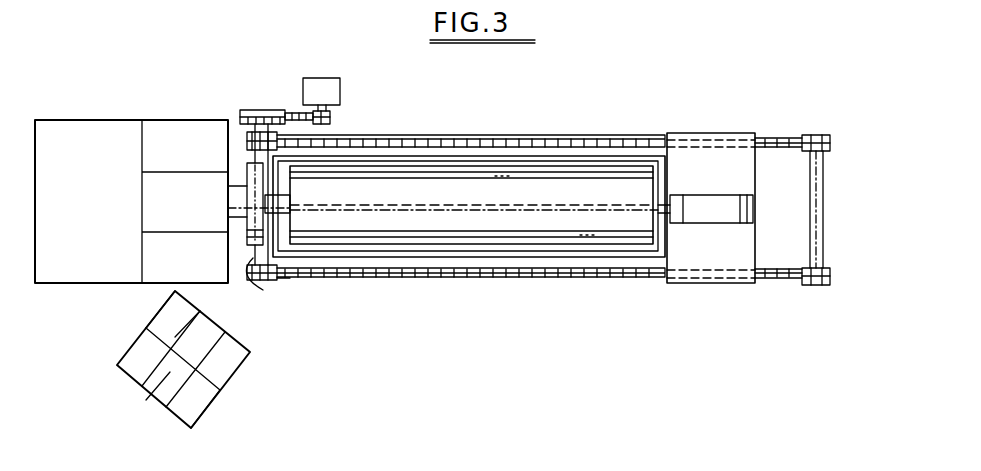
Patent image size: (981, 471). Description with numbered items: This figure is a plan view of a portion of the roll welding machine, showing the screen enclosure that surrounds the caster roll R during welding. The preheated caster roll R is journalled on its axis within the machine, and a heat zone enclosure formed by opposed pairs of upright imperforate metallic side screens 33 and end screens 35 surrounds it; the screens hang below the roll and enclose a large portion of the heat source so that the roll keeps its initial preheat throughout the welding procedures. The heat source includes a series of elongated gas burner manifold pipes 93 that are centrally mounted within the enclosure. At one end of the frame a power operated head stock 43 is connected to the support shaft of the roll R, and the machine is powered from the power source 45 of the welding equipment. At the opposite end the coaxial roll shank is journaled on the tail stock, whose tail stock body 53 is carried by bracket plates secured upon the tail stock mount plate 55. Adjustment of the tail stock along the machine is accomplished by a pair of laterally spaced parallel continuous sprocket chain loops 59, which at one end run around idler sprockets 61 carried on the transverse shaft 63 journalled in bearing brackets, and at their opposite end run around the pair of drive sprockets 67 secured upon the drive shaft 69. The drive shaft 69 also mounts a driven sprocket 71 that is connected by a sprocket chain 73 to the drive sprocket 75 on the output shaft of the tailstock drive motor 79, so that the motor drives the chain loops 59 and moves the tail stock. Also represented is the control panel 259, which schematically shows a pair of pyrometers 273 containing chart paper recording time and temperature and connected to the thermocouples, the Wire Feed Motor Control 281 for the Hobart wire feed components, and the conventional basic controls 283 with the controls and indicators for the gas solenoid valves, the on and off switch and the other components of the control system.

The side screens 33 is at (523, 157).
The end screens 35 is at (283, 188).
The head stock 43 is at (250, 173).
The power source 45 is at (203, 219).
The tail stock body 53 is at (710, 205).
The tail stock mount plate 55 is at (722, 262).
The sprocket chain loops 59 is at (780, 142).
The idler sprockets 61 is at (813, 135).
The transverse shaft 63 is at (817, 222).
The drive sprockets 67 is at (277, 278).
The drive shaft 69 is at (272, 285).
The driven sprocket 71 is at (242, 108).
The sprocket chain 73 is at (291, 111).
The drive sprocket 75 is at (330, 123).
The tailstock drive motor 79 is at (333, 90).
The gas burner manifold pipes 93 is at (440, 200).
The caster roll R is at (617, 233).
The control panel 259 is at (250, 365).
The pyrometers 273 is at (137, 347).
The Wire Feed Motor Control 281 is at (200, 329).
The basic controls 283 is at (212, 382).